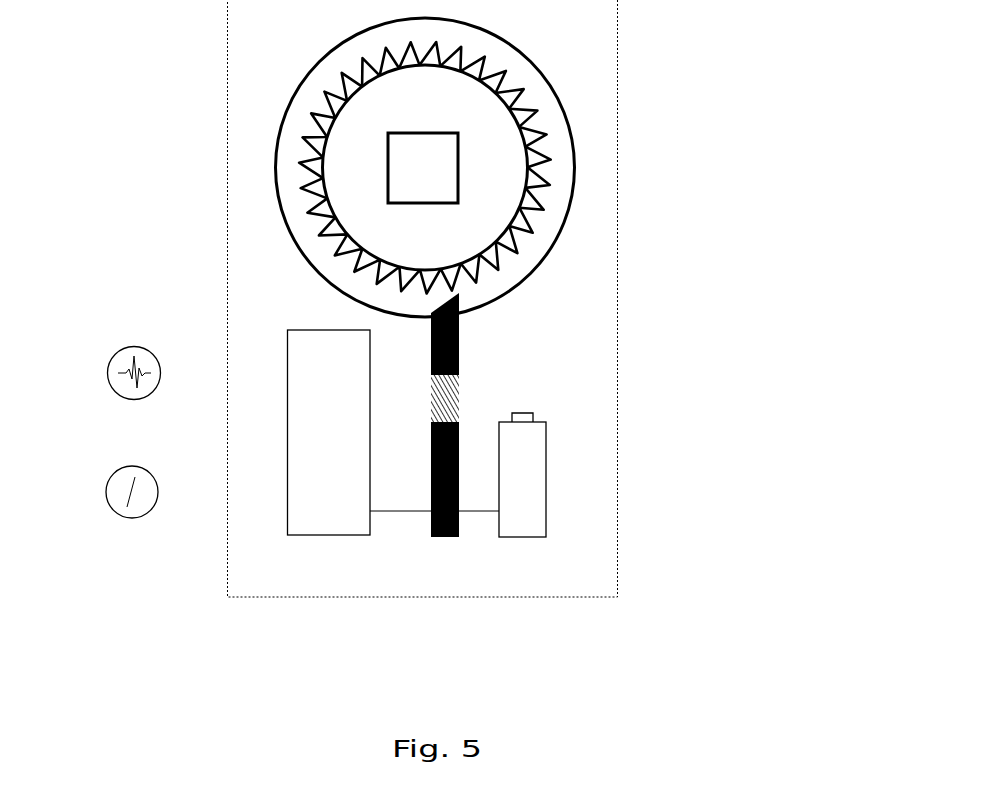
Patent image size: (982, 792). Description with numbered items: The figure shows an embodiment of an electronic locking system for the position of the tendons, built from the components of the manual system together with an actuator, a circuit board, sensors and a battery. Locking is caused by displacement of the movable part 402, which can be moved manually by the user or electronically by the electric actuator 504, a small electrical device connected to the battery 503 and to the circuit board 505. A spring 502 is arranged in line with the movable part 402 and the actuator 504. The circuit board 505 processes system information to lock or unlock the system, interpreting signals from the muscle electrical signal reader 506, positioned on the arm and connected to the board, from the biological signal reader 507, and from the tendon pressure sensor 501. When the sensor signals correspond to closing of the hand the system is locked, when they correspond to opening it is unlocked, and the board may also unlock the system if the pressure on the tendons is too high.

The tendon pressure sensor 501 is at (458, 152).
The movable part of the locking system 402 is at (458, 338).
The spring 502 is at (458, 398).
The battery 503 is at (546, 468).
The electric actuator 504 is at (459, 535).
The circuit board 505 is at (325, 535).
The muscle electrical signal reader 506 is at (317, 493).
The biological signal reader 507 is at (303, 373).